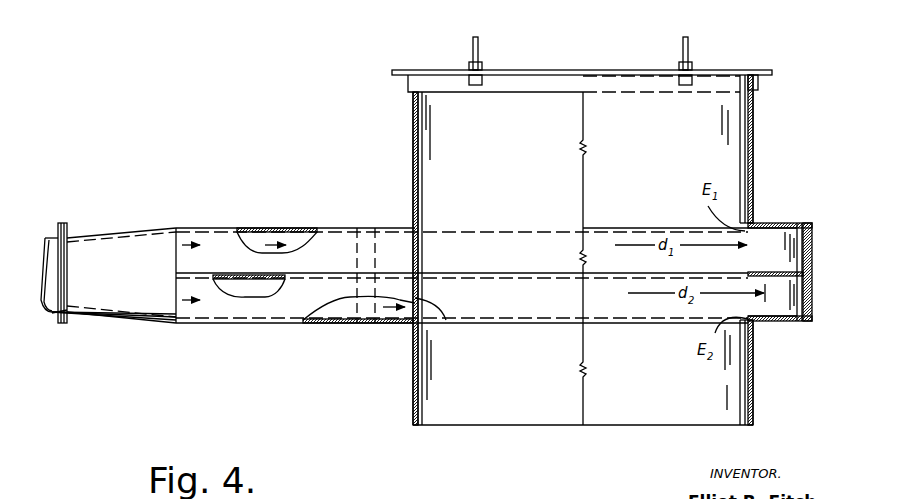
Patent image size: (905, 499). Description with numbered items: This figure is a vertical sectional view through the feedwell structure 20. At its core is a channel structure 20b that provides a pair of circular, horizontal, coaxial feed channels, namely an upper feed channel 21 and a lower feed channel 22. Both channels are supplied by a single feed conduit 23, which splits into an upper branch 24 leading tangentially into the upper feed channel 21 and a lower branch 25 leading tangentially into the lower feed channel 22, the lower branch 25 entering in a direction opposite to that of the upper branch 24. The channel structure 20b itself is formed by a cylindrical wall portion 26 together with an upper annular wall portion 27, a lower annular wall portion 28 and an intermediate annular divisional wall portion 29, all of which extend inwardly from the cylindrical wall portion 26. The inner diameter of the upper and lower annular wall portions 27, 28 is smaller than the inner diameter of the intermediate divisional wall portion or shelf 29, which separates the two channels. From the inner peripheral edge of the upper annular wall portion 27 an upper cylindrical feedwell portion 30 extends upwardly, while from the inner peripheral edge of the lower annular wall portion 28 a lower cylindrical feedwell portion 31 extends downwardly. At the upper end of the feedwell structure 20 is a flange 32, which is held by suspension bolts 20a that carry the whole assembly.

The feedwell structure 20 is at (398, 212).
The suspension bolts 20a is at (726, 25).
The channel structure 20b is at (812, 250).
The upper feed channel 21 is at (784, 235).
The lower feed channel 22 is at (784, 303).
The feed conduit 23 is at (120, 228).
The upper branch 24 is at (265, 230).
The lower branch 25 is at (292, 315).
The cylindrical wall portion 26 is at (812, 295).
The upper annular wall portion 27 is at (760, 222).
The lower annular wall portion 28 is at (762, 323).
The intermediate annular divisional wall portion 29 is at (778, 273).
The upper cylindrical feedwell portion 30 is at (752, 128).
The lower cylindrical feedwell portion 31 is at (756, 398).
The flange 32 is at (762, 68).